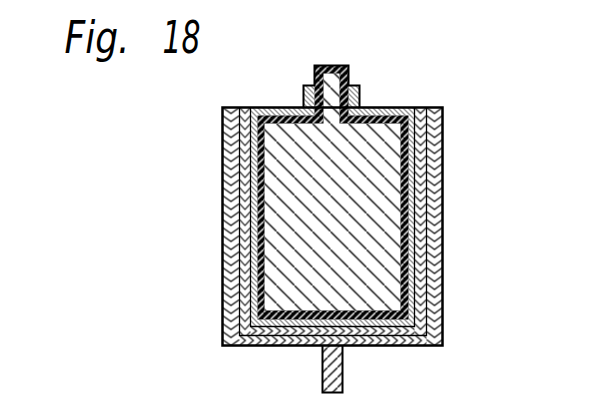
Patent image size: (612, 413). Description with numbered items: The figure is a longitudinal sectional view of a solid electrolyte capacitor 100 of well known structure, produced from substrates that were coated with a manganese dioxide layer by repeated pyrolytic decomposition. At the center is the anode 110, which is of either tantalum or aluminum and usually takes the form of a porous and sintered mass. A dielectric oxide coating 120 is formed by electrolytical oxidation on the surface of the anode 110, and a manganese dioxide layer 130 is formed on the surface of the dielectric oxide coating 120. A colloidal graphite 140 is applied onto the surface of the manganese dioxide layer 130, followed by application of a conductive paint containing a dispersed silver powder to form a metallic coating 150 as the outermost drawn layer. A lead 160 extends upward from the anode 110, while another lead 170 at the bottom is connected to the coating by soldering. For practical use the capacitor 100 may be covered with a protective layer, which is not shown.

The solid electrolyte capacitor 100 is at (291, 102).
The anode 110 is at (382, 134).
The dielectric oxide coating 120 is at (410, 110).
The manganese dioxide layer 130 is at (418, 162).
The colloidal graphite 140 is at (430, 110).
The metallic coating 150 is at (433, 207).
The lead 160 is at (326, 73).
The lead 170 is at (338, 368).